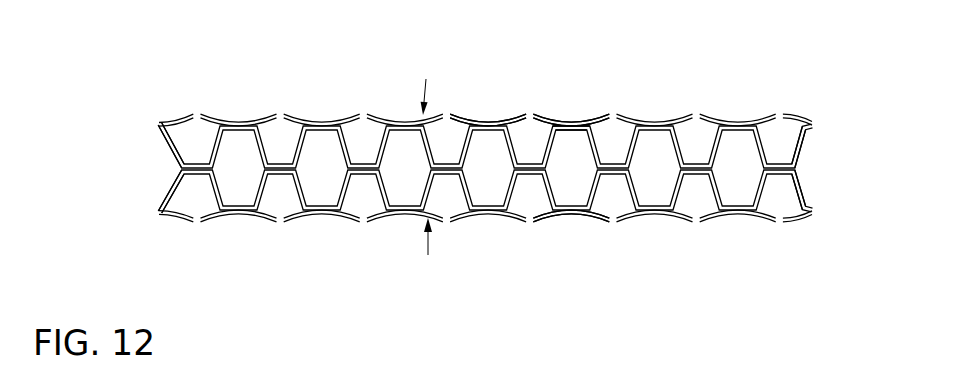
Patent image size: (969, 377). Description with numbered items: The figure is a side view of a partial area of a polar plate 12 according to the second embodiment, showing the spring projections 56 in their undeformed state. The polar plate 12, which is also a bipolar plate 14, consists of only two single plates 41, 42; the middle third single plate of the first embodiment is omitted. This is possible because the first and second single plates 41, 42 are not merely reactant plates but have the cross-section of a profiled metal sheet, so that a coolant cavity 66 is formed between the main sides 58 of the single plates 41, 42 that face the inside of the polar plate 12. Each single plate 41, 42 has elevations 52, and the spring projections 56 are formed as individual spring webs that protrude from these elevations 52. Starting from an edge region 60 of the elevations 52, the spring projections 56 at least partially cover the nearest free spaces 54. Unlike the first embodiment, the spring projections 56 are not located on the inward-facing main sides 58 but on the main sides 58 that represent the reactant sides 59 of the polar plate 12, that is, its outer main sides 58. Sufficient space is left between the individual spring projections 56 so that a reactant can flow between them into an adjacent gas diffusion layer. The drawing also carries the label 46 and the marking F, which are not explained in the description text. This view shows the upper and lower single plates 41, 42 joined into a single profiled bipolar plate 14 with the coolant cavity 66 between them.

The polar plate 12 is at (770, 68).
The bipolar plate 14 is at (481, 160).
The first single plate 41 is at (808, 192).
The second single plate 42 is at (809, 143).
The strut 46 is at (485, 168).
The elevations 52 is at (153, 203).
The free spaces 54 is at (266, 112).
The spring projections 56 is at (596, 219).
The main sides 58 is at (398, 72).
The reactant sides 59 is at (386, 282).
The edge region 60 is at (565, 103).
The coolant cavity 66 is at (273, 190).
The force direction F is at (433, 169).